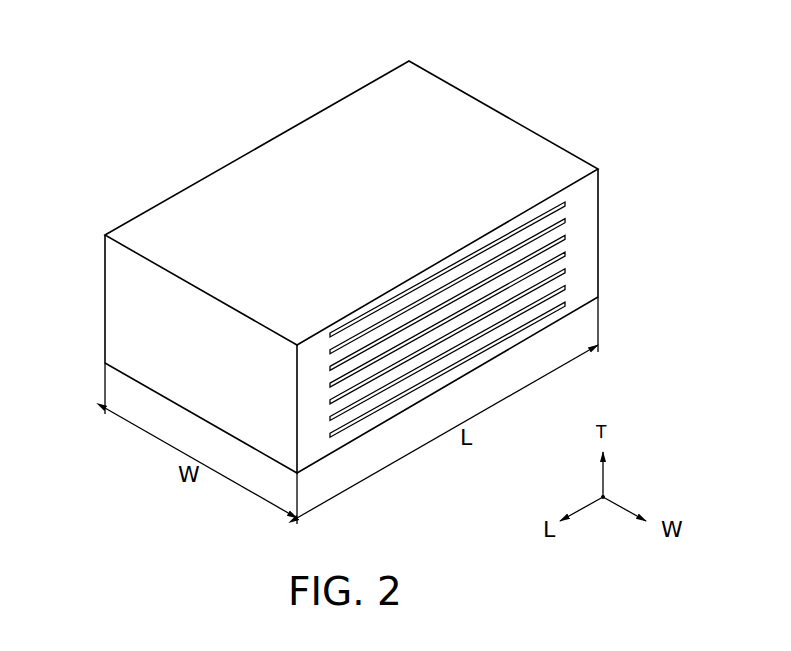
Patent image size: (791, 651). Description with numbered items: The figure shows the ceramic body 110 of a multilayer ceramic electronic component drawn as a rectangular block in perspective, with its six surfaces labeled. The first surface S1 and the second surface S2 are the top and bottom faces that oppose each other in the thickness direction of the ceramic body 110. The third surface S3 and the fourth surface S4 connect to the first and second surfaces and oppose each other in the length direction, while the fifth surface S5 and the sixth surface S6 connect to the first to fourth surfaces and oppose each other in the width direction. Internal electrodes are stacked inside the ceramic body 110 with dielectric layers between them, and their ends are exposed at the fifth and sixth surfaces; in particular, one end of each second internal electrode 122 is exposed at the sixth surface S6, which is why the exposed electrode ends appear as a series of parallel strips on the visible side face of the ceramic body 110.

The ceramic body 110 is at (430, 88).
The second internal electrode 122 is at (565, 217).
The first surface S1 is at (228, 207).
The second surface S2 is at (176, 378).
The third surface S3 is at (138, 297).
The fourth surface S4 is at (488, 137).
The fifth surface S5 is at (351, 131).
The sixth surface S6 is at (579, 246).